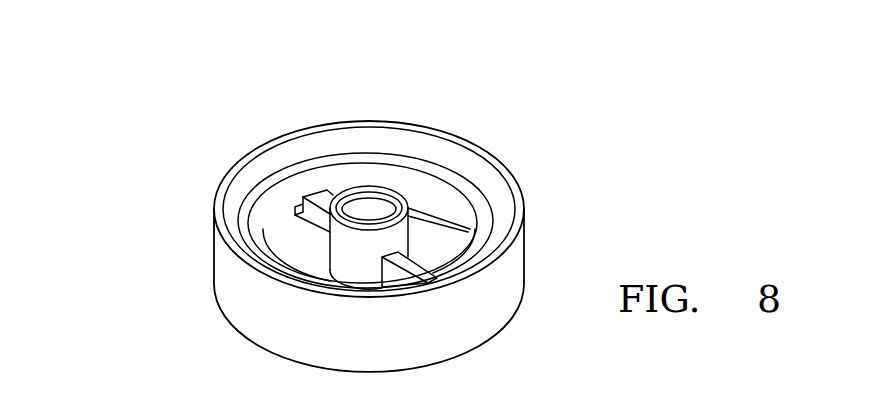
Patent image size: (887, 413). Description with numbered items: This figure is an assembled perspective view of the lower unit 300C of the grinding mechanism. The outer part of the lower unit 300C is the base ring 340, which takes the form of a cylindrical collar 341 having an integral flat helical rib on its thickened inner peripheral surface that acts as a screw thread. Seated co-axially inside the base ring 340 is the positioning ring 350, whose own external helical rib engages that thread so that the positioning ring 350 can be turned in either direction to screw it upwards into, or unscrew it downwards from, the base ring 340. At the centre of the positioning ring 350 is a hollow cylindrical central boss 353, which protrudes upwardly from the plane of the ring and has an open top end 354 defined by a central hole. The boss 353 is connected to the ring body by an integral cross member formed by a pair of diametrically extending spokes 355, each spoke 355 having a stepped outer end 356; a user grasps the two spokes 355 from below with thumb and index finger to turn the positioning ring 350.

The lower unit 300C is at (185, 158).
The base ring 340 is at (527, 238).
The cylindrical collar 341 is at (513, 178).
The positioning ring 350 is at (250, 242).
The central boss 353 is at (340, 267).
The open top end 354 is at (370, 207).
The spokes 355 is at (313, 208).
The stepped outer end 356 is at (296, 207).